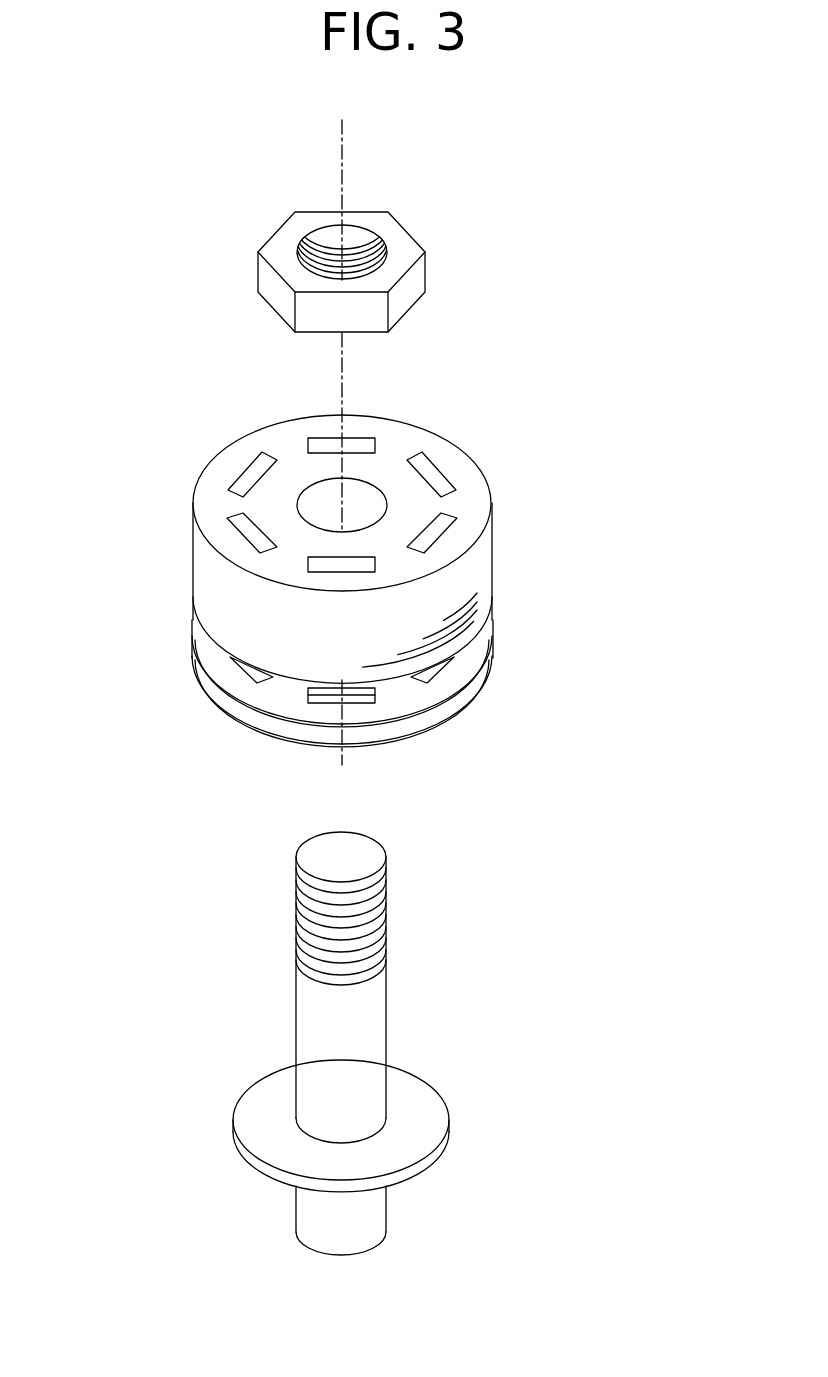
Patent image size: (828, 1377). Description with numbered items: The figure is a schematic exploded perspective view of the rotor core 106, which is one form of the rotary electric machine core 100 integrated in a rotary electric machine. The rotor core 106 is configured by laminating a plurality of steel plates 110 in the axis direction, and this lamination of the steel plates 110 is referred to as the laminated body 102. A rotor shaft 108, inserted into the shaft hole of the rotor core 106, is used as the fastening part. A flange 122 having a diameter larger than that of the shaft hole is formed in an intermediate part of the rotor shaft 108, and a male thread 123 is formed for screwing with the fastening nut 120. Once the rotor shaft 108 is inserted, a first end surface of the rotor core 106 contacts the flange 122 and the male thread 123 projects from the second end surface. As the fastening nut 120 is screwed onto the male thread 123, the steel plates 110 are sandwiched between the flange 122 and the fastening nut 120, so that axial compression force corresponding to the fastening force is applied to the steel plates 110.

The rotary electric machine core 100 is at (372, 692).
The rotor core 106 is at (512, 277).
The laminated body 102 is at (534, 578).
The steel plates 110 is at (225, 674).
The fastening nut 120 is at (270, 287).
The rotor shaft 108 is at (312, 1018).
The male thread 123 is at (386, 912).
The flange 122 is at (253, 1130).